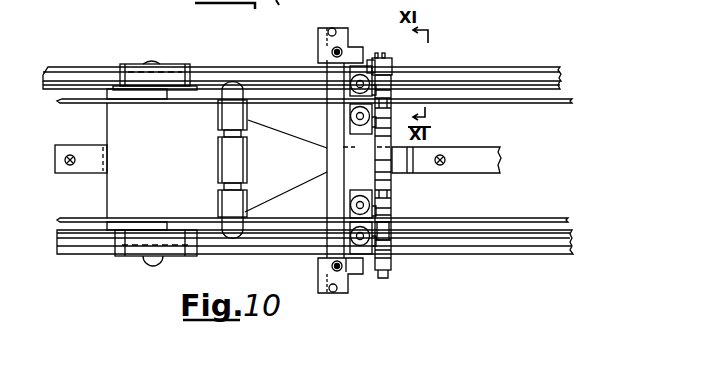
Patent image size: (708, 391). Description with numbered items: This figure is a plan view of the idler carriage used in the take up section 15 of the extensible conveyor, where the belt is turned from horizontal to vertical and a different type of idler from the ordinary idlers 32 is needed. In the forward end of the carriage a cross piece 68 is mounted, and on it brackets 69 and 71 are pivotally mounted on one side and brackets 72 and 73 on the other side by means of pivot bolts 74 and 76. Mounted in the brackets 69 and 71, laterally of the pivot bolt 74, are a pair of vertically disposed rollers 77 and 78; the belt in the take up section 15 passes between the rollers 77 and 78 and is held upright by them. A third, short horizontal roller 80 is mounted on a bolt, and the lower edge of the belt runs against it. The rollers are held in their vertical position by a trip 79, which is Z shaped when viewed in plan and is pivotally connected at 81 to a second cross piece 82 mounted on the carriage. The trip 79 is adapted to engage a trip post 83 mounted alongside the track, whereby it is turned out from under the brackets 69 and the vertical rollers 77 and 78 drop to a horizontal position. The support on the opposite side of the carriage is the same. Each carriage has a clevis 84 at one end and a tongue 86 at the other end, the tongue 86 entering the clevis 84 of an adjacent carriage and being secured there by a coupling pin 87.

The take up section 15 is at (527, 102).
The idlers 32 is at (228, 163).
The cross piece 68 is at (395, 63).
The bracket 69 is at (372, 259).
The bracket 71 is at (351, 195).
The bracket 72 is at (371, 61).
The bracket 73 is at (355, 136).
The pivot bolt 74 is at (392, 183).
The pivot bolt 76 is at (381, 146).
The vertically disposed roller 77 is at (348, 208).
The vertically disposed roller 78 is at (347, 243).
The trip 79 is at (318, 44).
The short horizontal roller 80 is at (393, 211).
The pivotal connection 81 is at (346, 275).
The second cross piece 82 is at (327, 122).
The trip post 83 is at (334, 28).
The clevis 84 is at (86, 146).
The tongue 86 is at (453, 173).
The coupling pin 87 is at (70, 166).